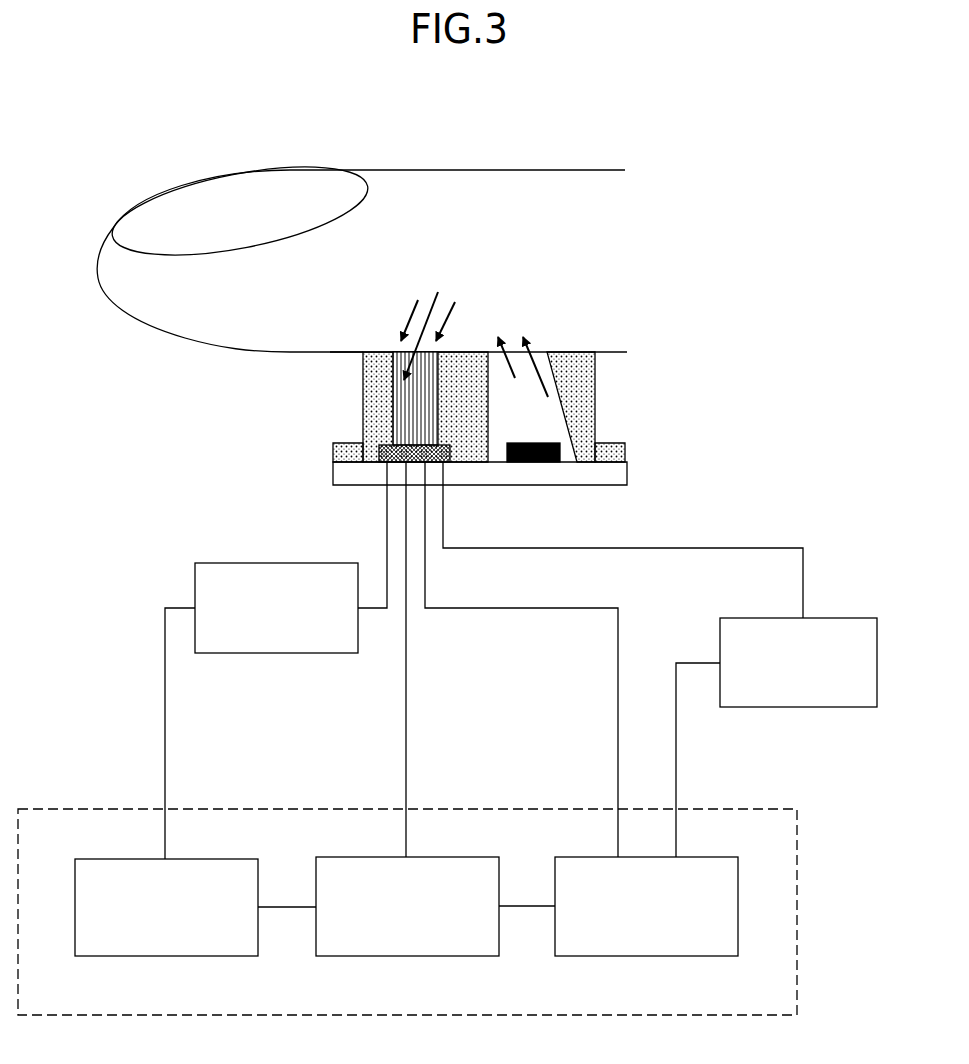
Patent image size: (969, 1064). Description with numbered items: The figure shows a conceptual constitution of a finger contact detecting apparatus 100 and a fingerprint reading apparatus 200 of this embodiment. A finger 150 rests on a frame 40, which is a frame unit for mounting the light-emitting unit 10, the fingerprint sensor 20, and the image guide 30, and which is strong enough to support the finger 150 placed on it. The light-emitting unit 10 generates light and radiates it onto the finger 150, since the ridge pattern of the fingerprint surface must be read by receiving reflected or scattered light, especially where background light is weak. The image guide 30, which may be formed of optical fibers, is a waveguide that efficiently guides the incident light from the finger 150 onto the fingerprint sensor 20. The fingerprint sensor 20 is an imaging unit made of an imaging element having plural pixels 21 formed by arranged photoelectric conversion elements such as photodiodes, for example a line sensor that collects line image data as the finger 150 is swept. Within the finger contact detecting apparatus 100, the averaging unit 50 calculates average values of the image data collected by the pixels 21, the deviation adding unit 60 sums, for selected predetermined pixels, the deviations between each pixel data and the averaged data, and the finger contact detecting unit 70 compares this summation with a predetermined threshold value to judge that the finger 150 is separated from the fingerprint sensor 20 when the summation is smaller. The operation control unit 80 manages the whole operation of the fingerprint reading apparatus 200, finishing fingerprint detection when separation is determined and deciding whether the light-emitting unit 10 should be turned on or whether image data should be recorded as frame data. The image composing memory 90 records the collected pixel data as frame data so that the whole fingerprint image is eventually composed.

The finger 150 is at (470, 188).
The fingerprint reading apparatus 200 is at (522, 390).
The fingerprint sensor 20 is at (358, 456).
The pixels 21 is at (383, 446).
The image guide 30 is at (393, 374).
The frame 40 is at (596, 385).
The light-emitting unit 10 is at (541, 444).
The operation control unit 80 is at (287, 563).
The image composing memory 90 is at (837, 618).
The finger contact detecting apparatus 100 is at (752, 806).
The finger contact detecting unit 70 is at (170, 956).
The deviation adding unit 60 is at (410, 956).
The averaging unit 50 is at (650, 956).